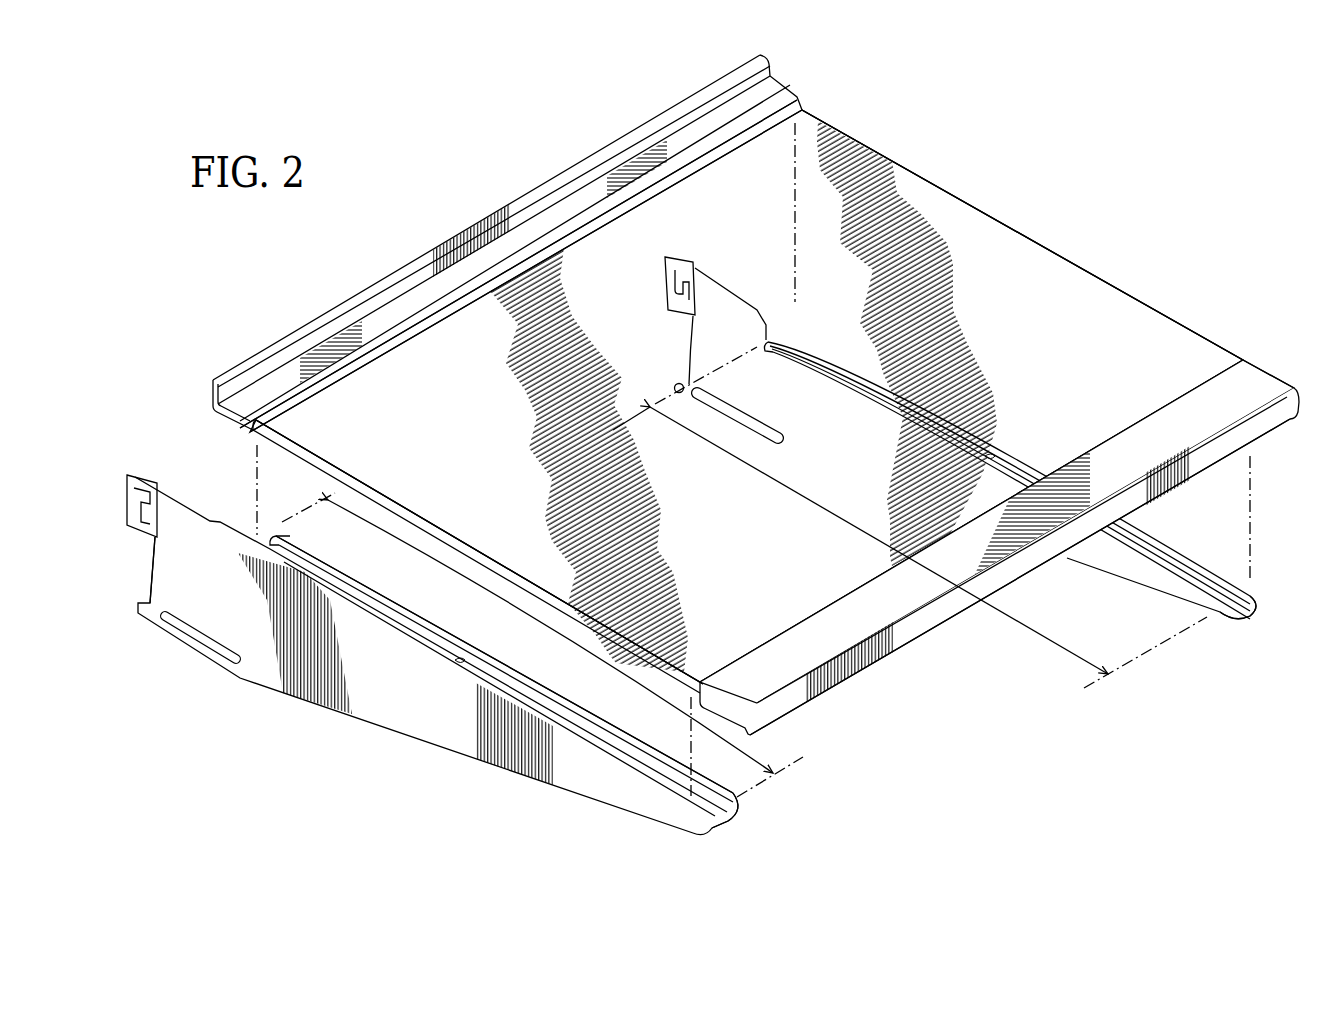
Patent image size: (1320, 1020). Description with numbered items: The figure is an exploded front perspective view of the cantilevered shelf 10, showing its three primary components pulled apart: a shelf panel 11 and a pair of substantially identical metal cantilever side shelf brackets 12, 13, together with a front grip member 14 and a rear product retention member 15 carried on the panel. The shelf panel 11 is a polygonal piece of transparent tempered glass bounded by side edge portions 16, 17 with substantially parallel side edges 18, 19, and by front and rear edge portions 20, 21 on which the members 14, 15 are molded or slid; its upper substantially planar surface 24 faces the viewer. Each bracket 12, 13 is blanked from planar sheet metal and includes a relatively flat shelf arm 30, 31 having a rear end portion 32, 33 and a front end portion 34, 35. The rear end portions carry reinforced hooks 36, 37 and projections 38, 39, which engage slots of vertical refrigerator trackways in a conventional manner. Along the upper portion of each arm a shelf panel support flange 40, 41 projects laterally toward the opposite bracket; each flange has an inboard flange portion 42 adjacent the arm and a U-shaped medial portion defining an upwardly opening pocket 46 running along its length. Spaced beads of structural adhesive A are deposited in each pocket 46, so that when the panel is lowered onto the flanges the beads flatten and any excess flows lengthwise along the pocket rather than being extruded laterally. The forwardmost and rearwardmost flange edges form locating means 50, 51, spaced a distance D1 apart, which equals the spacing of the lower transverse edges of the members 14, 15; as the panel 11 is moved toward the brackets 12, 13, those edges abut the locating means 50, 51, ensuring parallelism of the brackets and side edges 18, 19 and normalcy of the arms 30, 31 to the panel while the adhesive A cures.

The shelf 10 is at (1034, 69).
The shelf panel 11 is at (948, 209).
The side shelf bracket 12 is at (701, 649).
The side shelf bracket 13 is at (752, 439).
The front grip member 14 is at (910, 643).
The rear product retention member 15 is at (497, 209).
The side edge portion 16 is at (996, 220).
The side edge portion 17 is at (305, 445).
The side edge 18 is at (1075, 263).
The side edge 19 is at (325, 470).
The front edge portion 20 is at (1126, 412).
The rear edge portion 21 is at (398, 352).
The upper planar surface 24 is at (737, 566).
The shelf arm 30 is at (263, 668).
The shelf arm 31 is at (975, 450).
The rear end portion 32 is at (198, 586).
The rear end portion 33 is at (660, 310).
The front end portion 34 is at (644, 807).
The front end portion 35 is at (1150, 580).
The reinforced hook 36 is at (127, 491).
The reinforced hook 37 is at (665, 283).
The projection 38 is at (138, 608).
The projection 39 is at (672, 388).
The shelf panel support flange 40 is at (516, 661).
The shelf panel support flange 41 is at (836, 391).
The inboard flange portion 42 is at (343, 601).
The pocket 46 is at (1016, 474).
The locating means 50 is at (727, 820).
The locating means 51 is at (775, 337).
The structural adhesive A is at (812, 356).
The distance D1 is at (744, 572).